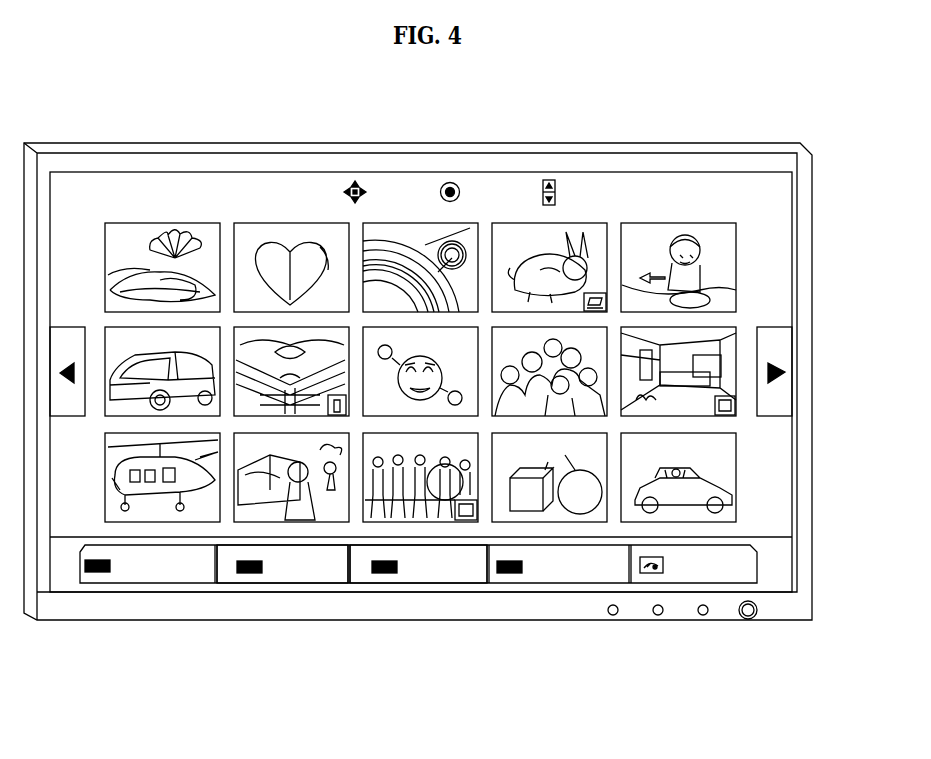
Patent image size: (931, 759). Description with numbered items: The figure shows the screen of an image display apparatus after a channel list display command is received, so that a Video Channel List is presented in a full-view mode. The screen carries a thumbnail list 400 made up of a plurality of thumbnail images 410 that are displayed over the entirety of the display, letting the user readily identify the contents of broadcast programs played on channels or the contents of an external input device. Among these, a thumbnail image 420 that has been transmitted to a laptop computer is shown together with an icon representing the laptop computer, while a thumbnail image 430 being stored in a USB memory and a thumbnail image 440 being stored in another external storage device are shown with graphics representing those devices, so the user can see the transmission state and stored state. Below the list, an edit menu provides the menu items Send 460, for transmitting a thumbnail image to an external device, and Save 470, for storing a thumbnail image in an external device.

The thumbnail list 400 is at (647, 172).
The thumbnail images 410 is at (200, 223).
The thumbnail image 420 is at (582, 224).
The thumbnail image 430 is at (313, 327).
The thumbnail image 440 is at (718, 327).
The Send menu item 460 is at (427, 583).
The Save menu item 470 is at (292, 585).